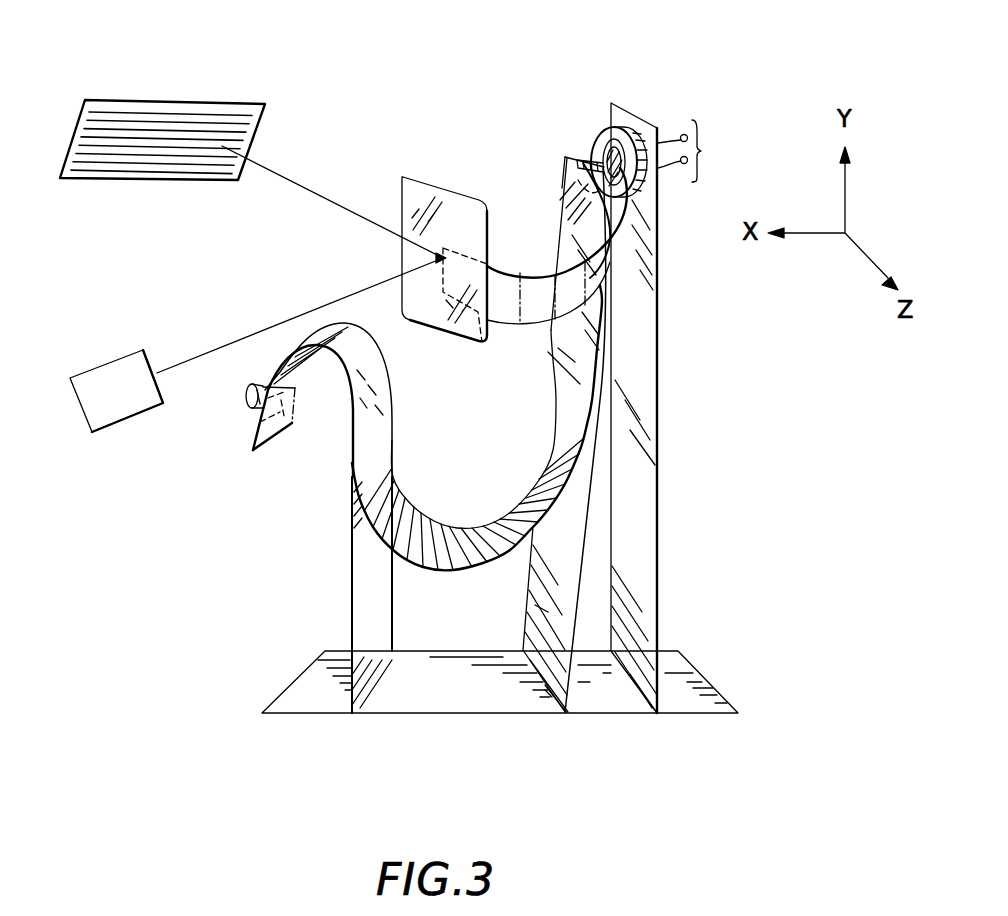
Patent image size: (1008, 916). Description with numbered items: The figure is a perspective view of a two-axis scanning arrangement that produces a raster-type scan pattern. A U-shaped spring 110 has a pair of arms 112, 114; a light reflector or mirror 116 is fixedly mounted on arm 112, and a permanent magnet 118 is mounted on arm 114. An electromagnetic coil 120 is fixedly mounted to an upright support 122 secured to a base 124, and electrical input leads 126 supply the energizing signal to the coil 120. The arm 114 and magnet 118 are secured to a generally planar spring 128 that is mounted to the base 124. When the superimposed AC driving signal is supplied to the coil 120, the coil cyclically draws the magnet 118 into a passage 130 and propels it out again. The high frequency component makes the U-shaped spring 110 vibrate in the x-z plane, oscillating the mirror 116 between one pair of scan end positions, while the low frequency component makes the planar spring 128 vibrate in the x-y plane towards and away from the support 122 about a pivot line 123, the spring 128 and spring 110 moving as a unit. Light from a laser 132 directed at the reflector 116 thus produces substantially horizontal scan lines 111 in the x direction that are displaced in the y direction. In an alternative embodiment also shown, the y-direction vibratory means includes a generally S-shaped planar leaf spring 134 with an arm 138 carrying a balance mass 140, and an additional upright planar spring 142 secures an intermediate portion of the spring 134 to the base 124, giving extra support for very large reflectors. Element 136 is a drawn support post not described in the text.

The U-shaped spring 110 is at (610, 283).
The horizontal scan lines 111 is at (241, 100).
The arm 112 is at (482, 345).
The arm 114 is at (566, 185).
The mirror 116 is at (403, 178).
The permanent magnet 118 is at (596, 160).
The electromagnetic coil 120 is at (643, 147).
The upright support 122 is at (654, 454).
The pivot line 123 is at (548, 693).
The base 124 is at (500, 708).
The electrical input leads 126 is at (706, 151).
The planar spring 128 is at (543, 610).
The passage 130 is at (617, 142).
The laser 132 is at (148, 410).
The S shaped planar leaf spring 134 is at (463, 528).
The slanted support post 136 is at (555, 385).
The arm 138 is at (280, 427).
The balance mass 140 is at (246, 400).
The upright planar spring 142 is at (368, 603).